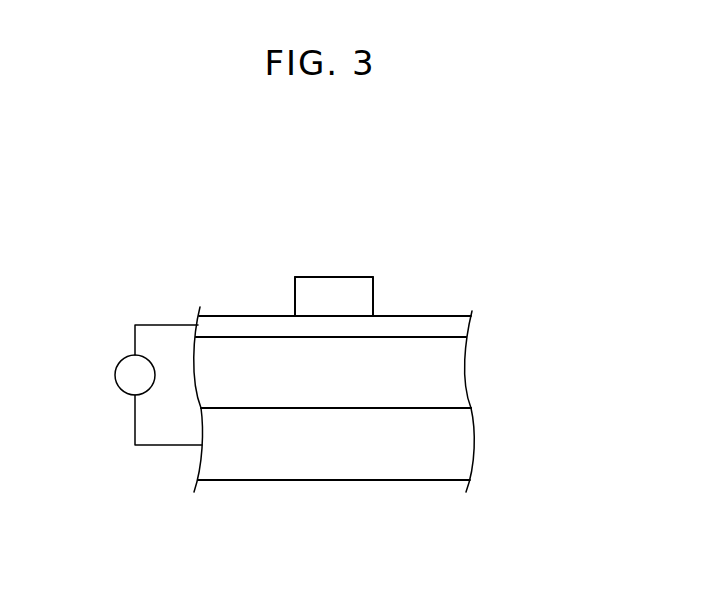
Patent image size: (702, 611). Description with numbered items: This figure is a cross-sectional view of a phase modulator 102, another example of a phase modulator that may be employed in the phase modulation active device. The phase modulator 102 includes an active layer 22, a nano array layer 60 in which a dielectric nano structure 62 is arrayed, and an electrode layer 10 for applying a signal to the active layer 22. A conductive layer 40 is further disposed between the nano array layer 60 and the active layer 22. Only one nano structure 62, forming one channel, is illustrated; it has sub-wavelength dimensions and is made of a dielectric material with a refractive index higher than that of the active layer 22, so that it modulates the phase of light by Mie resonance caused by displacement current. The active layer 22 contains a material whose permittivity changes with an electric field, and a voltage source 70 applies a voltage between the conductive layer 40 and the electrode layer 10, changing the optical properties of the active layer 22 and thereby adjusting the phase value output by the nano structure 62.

The phase modulator 102 is at (494, 216).
The electrode layer 10 is at (455, 446).
The active layer 22 is at (455, 373).
The conductive layer 40 is at (455, 327).
The nano array layer 60 is at (382, 297).
The nano structure 62 is at (337, 288).
The voltage source 70 is at (115, 374).